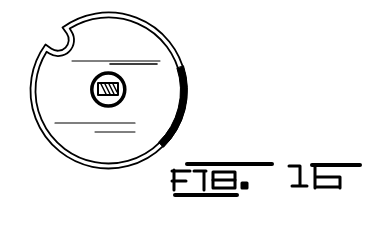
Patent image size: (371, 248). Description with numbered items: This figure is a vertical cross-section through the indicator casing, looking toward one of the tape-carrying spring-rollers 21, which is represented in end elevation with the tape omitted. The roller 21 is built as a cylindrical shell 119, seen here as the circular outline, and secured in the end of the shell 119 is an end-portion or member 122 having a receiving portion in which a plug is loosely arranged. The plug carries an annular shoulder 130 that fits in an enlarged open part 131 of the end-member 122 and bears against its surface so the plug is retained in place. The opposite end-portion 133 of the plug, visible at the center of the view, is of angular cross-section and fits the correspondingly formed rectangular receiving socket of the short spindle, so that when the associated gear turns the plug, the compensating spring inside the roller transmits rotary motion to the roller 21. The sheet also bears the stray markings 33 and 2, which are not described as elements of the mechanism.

The rim of disk 119 is at (185, 110).
The thickened rim segment 21 is at (184, 66).
The disk face 122 is at (107, 96).
The central hub ring 130 is at (128, 63).
The hub insert 131 is at (125, 86).
The hatched key element 133 is at (92, 93).
The sheet numeral 33 is at (219, 16).
The sheet numeral 2 is at (349, 16).